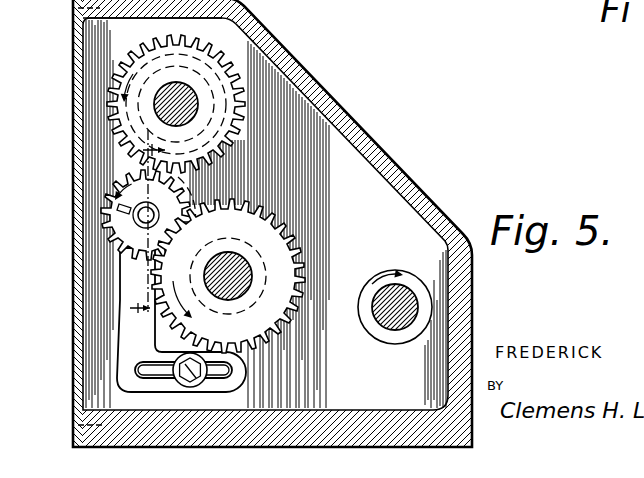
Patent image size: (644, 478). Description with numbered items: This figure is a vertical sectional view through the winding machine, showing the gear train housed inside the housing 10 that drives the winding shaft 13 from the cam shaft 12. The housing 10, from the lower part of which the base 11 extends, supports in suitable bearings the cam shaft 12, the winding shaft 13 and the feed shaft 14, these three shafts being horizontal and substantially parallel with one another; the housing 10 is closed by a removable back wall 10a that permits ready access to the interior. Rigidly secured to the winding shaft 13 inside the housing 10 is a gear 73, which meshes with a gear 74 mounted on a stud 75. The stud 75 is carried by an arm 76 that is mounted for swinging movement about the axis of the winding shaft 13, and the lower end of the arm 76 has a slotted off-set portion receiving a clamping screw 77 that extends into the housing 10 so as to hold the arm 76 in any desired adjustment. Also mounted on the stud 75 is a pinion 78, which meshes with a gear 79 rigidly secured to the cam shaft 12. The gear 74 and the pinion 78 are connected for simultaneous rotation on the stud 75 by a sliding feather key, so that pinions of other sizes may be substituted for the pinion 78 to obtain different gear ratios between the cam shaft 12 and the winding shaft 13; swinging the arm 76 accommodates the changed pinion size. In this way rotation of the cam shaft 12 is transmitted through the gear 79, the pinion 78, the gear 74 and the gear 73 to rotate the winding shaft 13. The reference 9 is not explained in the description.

The cover plate 9 is at (383, 0).
The housing 10 is at (253, 432).
The removable back wall 10a is at (80, 373).
The base 11 is at (142, 232).
The cam shaft 12 is at (238, 283).
The winding shaft 13 is at (187, 110).
The feed shaft 14 is at (391, 333).
The gear 73 is at (227, 151).
The gear 74 is at (190, 197).
The stud 75 is at (137, 193).
The arm 76 is at (118, 331).
The clamping screw 77 is at (196, 378).
The pinion 78 is at (130, 222).
The gear 79 is at (273, 252).